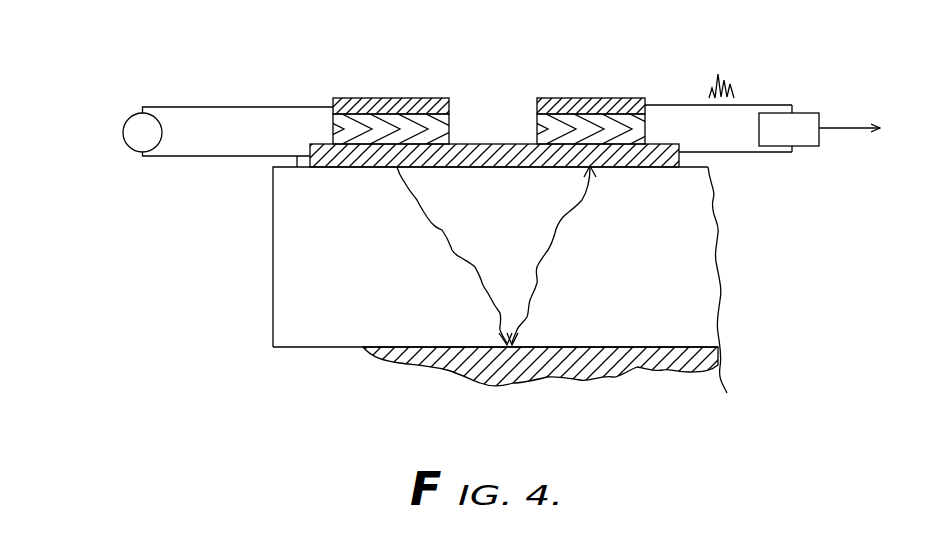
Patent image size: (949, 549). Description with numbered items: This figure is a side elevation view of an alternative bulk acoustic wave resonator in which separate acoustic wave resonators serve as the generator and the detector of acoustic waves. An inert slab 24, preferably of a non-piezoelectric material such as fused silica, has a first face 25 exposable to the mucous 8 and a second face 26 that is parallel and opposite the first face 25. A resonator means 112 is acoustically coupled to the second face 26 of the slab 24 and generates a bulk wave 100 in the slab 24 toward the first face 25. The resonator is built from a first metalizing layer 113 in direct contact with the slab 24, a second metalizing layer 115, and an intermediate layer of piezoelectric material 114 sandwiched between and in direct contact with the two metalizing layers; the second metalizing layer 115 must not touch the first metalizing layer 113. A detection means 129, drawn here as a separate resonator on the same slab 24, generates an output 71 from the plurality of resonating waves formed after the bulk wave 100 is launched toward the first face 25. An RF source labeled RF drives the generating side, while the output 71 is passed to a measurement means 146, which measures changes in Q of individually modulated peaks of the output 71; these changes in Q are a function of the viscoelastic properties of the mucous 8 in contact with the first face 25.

The mucous 8 is at (607, 368).
The inert slab 24 is at (695, 270).
The first face 25 is at (305, 348).
The second face 26 is at (297, 168).
The output 71 is at (733, 73).
The bulk wave 100 is at (452, 250).
The resonator means 112 is at (414, 82).
The first metalizing layer 113 is at (325, 160).
The intermediate layer of piezoelectric material 114 is at (438, 130).
The second metalizing layer 115 is at (437, 103).
The detection means 129 is at (650, 73).
The measurement means 146 is at (810, 112).
The RF source RF is at (228, 131).